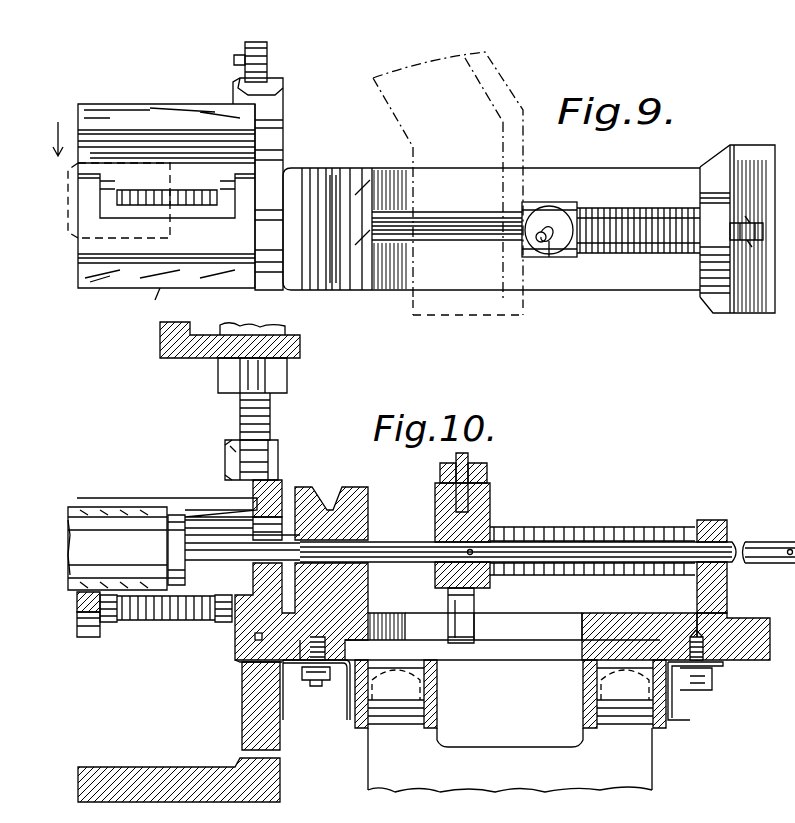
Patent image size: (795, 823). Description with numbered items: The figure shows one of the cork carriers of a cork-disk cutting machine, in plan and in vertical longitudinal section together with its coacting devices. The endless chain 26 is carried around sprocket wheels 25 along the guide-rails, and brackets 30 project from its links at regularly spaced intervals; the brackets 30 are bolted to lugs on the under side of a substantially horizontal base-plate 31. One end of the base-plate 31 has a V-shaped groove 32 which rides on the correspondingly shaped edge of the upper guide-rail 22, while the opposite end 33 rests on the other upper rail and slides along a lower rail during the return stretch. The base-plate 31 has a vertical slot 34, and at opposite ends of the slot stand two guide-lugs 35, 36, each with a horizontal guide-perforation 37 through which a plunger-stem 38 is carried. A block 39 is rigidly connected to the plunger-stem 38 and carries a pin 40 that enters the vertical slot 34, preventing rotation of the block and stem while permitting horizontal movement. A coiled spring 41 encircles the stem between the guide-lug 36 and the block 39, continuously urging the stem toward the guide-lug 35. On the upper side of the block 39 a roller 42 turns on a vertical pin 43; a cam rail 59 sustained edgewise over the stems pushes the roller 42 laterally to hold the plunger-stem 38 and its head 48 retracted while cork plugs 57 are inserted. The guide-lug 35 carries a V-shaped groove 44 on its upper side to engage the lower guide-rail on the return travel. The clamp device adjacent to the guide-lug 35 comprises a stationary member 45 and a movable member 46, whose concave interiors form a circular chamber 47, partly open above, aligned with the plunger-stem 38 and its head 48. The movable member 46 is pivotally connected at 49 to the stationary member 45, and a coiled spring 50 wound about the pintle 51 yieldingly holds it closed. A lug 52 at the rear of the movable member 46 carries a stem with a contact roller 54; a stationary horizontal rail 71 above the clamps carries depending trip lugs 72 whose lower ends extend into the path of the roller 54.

In FIG. 10, the upper horizontal guide-rail 22 is at (242, 717).
In FIG. 10, the sprocket wheel 25 is at (510, 760).
In FIG. 10, the endless chain 26 is at (440, 722).
In FIG. 10, the bracket 30 is at (332, 690).
In FIG. 10, the base-plate 31 is at (628, 606).
In FIG. 9, the V-shaped groove 32 is at (625, 288).
In FIG. 10, the V-shaped groove 32 is at (265, 648).
In FIG. 9, the opposite end of base-plate 33 is at (750, 313).
In FIG. 10, the opposite end of base-plate 33 is at (758, 618).
In FIG. 9, the vertical slot 34 is at (460, 204).
In FIG. 10, the vertical slot 34 is at (540, 630).
In FIG. 9, the guide-lug 35 is at (362, 176).
In FIG. 10, the guide-lug 35 is at (358, 525).
In FIG. 9, the guide-lug 36 is at (710, 280).
In FIG. 10, the guide-lug 36 is at (710, 520).
In FIG. 10, the guide-perforation 37 is at (368, 546).
In FIG. 9, the plunger-stem 38 is at (468, 244).
In FIG. 10, the plunger-stem 38 is at (596, 545).
In FIG. 9, the block 39 is at (570, 210).
In FIG. 10, the block 39 is at (490, 498).
In FIG. 10, the pin 40 is at (448, 606).
In FIG. 9, the coiled spring 41 is at (643, 210).
In FIG. 10, the coiled spring 41 is at (544, 530).
In FIG. 9, the roller 42 is at (540, 215).
In FIG. 10, the roller 42 is at (487, 470).
In FIG. 9, the vertical pin 43 is at (550, 248).
In FIG. 10, the vertical pin 43 is at (468, 455).
In FIG. 9, the V-shaped groove 44 is at (326, 290).
In FIG. 10, the V-shaped groove 44 is at (332, 497).
In FIG. 9, the stationary member 45 is at (155, 270).
In FIG. 10, the stationary member 45 is at (225, 560).
In FIG. 9, the movable member 46 is at (158, 112).
In FIG. 10, the movable member 46 is at (108, 498).
In FIG. 10, the circular chamber 47 is at (235, 625).
In FIG. 10, the head 48 is at (190, 515).
In FIG. 9, the pivotal connection 49 is at (100, 200).
In FIG. 10, the pivotal connection 49 is at (75, 628).
In FIG. 9, the coiled spring 50 is at (178, 191).
In FIG. 10, the coiled spring 50 is at (162, 620).
In FIG. 10, the pintle 51 is at (138, 620).
In FIG. 9, the lug 52 is at (283, 98).
In FIG. 9, the contact roller 54 is at (270, 44).
In FIG. 10, the contact roller 54 is at (268, 440).
In FIG. 10, the cork plug 57 is at (80, 548).
In FIG. 9, the cam rail 59 is at (478, 318).
In FIG. 10, the horizontal rail 71 is at (300, 352).
In FIG. 10, the trip lug 72 is at (272, 408).